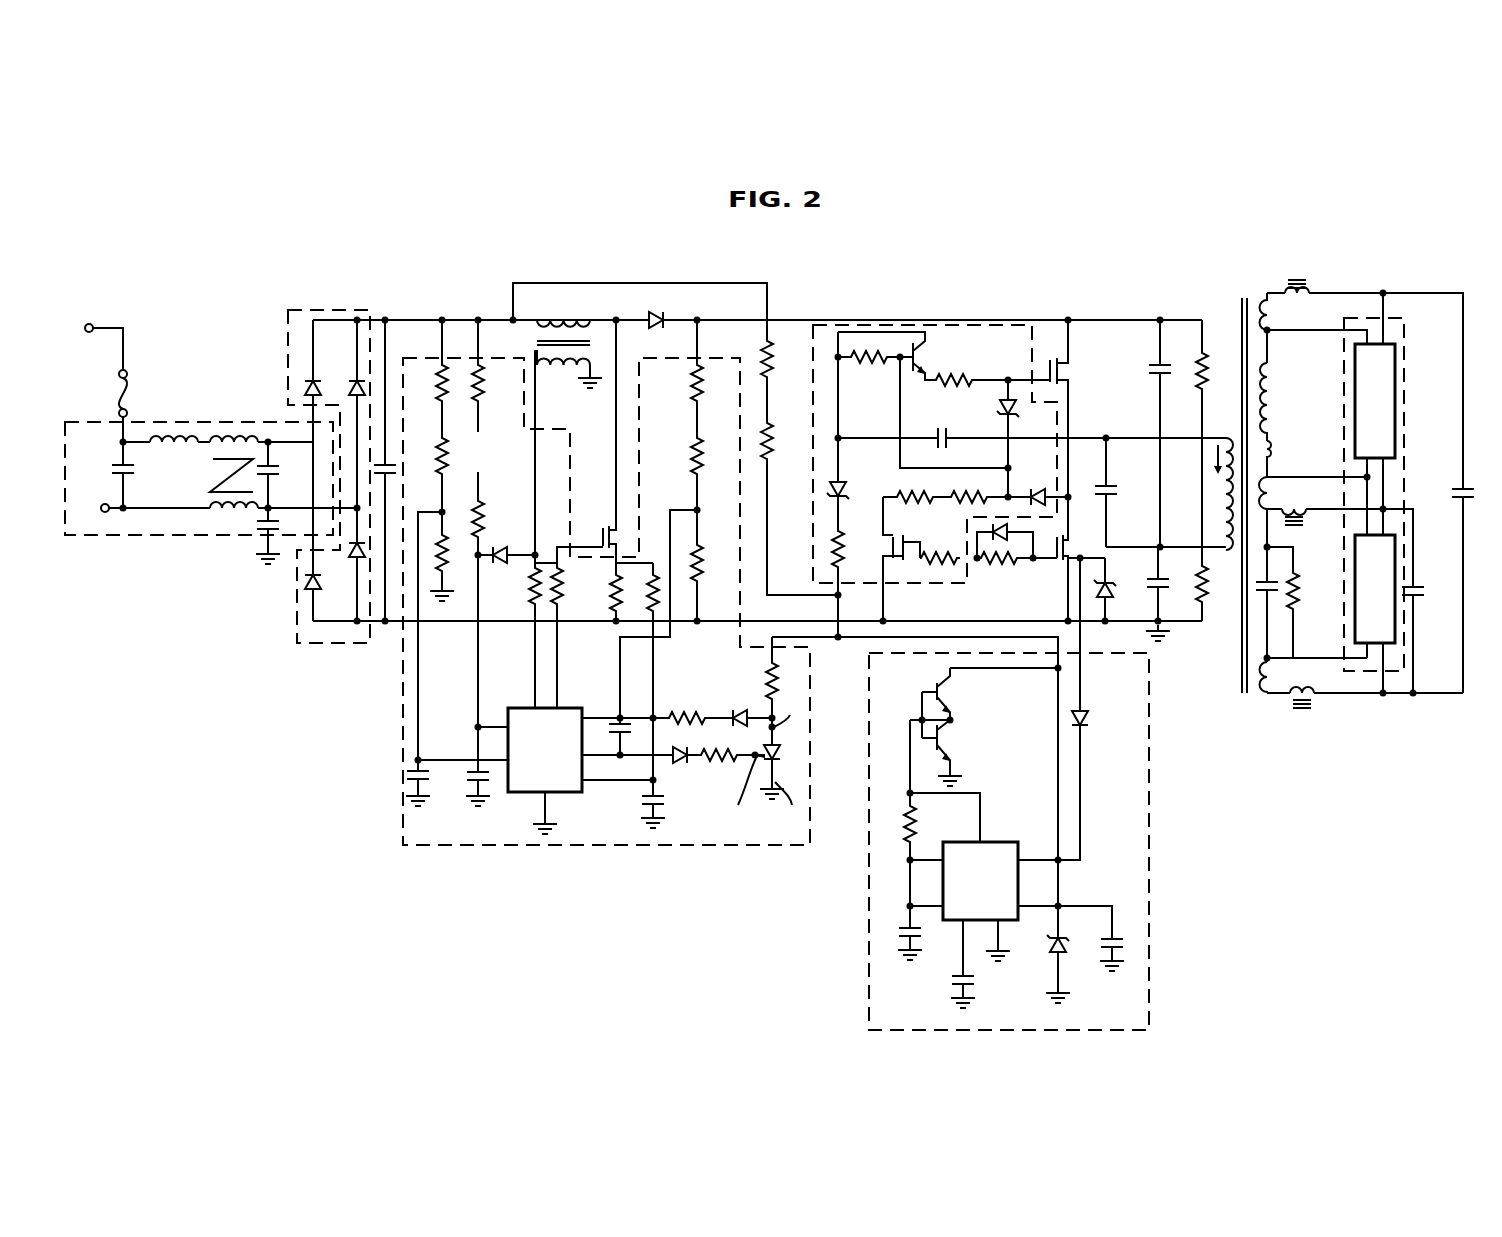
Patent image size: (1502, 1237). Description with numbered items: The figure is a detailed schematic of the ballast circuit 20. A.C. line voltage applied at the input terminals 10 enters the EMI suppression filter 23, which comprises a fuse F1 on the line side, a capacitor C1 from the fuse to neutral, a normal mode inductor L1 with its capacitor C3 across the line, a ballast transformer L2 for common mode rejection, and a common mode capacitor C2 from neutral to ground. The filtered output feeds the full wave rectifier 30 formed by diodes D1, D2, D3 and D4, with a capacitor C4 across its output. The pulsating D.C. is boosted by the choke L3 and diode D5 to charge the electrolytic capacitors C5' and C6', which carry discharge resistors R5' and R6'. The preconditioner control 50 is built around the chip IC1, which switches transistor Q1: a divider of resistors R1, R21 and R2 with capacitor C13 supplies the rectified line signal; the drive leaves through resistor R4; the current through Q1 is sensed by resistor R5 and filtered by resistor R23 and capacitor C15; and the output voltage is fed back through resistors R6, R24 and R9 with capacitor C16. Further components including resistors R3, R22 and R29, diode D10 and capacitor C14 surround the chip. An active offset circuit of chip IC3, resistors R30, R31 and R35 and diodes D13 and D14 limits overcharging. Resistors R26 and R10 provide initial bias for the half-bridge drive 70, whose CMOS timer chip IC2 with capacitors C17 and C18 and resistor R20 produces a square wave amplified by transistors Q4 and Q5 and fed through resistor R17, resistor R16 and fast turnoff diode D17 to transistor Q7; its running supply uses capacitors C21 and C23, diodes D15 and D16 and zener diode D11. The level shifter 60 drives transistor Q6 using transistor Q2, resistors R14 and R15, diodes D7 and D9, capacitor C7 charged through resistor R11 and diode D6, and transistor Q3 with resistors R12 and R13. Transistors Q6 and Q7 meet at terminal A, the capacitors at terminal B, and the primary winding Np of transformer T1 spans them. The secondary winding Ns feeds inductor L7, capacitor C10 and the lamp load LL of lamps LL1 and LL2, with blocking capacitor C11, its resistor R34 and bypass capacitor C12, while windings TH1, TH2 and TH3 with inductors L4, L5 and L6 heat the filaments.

The input terminals 10 is at (89, 325).
The ballast circuit 20 is at (228, 264).
The EMI suppression filter 23 is at (122, 560).
The full wave rectifier 30 is at (316, 310).
The preconditioner control 50 is at (626, 850).
The level shifter 60 is at (993, 322).
The half-bridge drive 70 is at (1150, 968).
The fuse F1 is at (127, 394).
The normal mode inductor L1 is at (160, 441).
The ballast transformer L2 is at (225, 440).
The choke L3 is at (575, 320).
The inductor L4 is at (1297, 272).
The inductor L5 is at (1308, 524).
The inductor L6 is at (1317, 706).
The inductor L7 is at (1275, 452).
The capacitor C1 is at (140, 475).
The common mode capacitor C2 is at (260, 532).
The capacitor C3 is at (282, 475).
The capacitor C4 is at (392, 478).
The capacitor C5' is at (1144, 361).
The capacitor C6' is at (1147, 594).
The capacitor C7 is at (942, 445).
The capacitor C10 is at (1460, 486).
The D.C. blocking capacitor C11 is at (1301, 573).
The bypass capacitor C12 is at (1415, 598).
The capacitor C13 is at (410, 775).
The capacitor C14 is at (478, 790).
The capacitor C15 is at (645, 800).
The capacitor C16 is at (618, 718).
The capacitor C17 is at (900, 933).
The capacitor C18 is at (955, 983).
The capacitor C21 is at (1120, 945).
The capacitor C23 is at (1108, 490).
The diode D1 is at (302, 396).
The diode D2 is at (352, 386).
The diode D3 is at (300, 586).
The diode D4 is at (347, 566).
The diode D5 is at (647, 314).
The diode D6 is at (825, 487).
The diode D7 is at (1000, 408).
The diode D9 is at (1040, 490).
The diode D10 is at (498, 563).
The zener diode D11 is at (1052, 955).
The diode D13 is at (684, 755).
The diode D14 is at (745, 703).
The diode D15 is at (1085, 718).
The diode D16 is at (1095, 590).
The fast turnoff diode D17 is at (988, 528).
The resistor R1 is at (438, 396).
The resistor R2 is at (452, 566).
The resistor R3 is at (482, 512).
The resistor R4 is at (560, 585).
The resistor R5 is at (597, 596).
The discharge resistor R5' is at (1220, 381).
The resistor R6 is at (675, 382).
The discharge resistor R6' is at (1221, 590).
The resistor R9 is at (700, 582).
The resistor R10 is at (770, 445).
The resistor R11 is at (828, 550).
The resistor R12 is at (870, 360).
The resistor R13 is at (958, 384).
The resistor R14 is at (972, 494).
The resistor R15 is at (910, 495).
The resistor R16 is at (943, 568).
The resistor R17 is at (1010, 562).
The resistor R20 is at (914, 824).
The resistor R21 is at (445, 456).
The resistor R22 is at (533, 605).
The resistor R23 is at (655, 605).
The resistor R24 is at (693, 473).
The resistor R26 is at (765, 348).
The resistor R29 is at (480, 425).
The resistor R30 is at (703, 716).
The resistor R31 is at (776, 700).
The resistor R34 is at (1295, 595).
The resistor R35 is at (752, 757).
The transistor Q1 is at (602, 537).
The transistor Q2 is at (890, 547).
The transistor Q3 is at (934, 348).
The transistor Q4 is at (935, 688).
The transistor Q5 is at (945, 750).
The transistor Q6 is at (1063, 373).
The transistor Q7 is at (1060, 547).
The preconditioner integrated circuit chip IC1 is at (546, 759).
The integrated circuit chip IC2 is at (982, 889).
The integrated circuit chip IC3 is at (782, 752).
The transformer T1 is at (1240, 637).
The primary winding Np is at (1232, 545).
The secondary winding Ns is at (1262, 395).
The filament heater winding TH1 is at (1260, 322).
The filament heater winding TH2 is at (1262, 500).
The filament heater winding TH3 is at (1260, 686).
The lamp load LL is at (1408, 320).
The fluorescent lamp LL1 is at (1375, 401).
The fluorescent lamp LL2 is at (1375, 589).
The terminal A is at (1106, 436).
The terminal B is at (1161, 547).